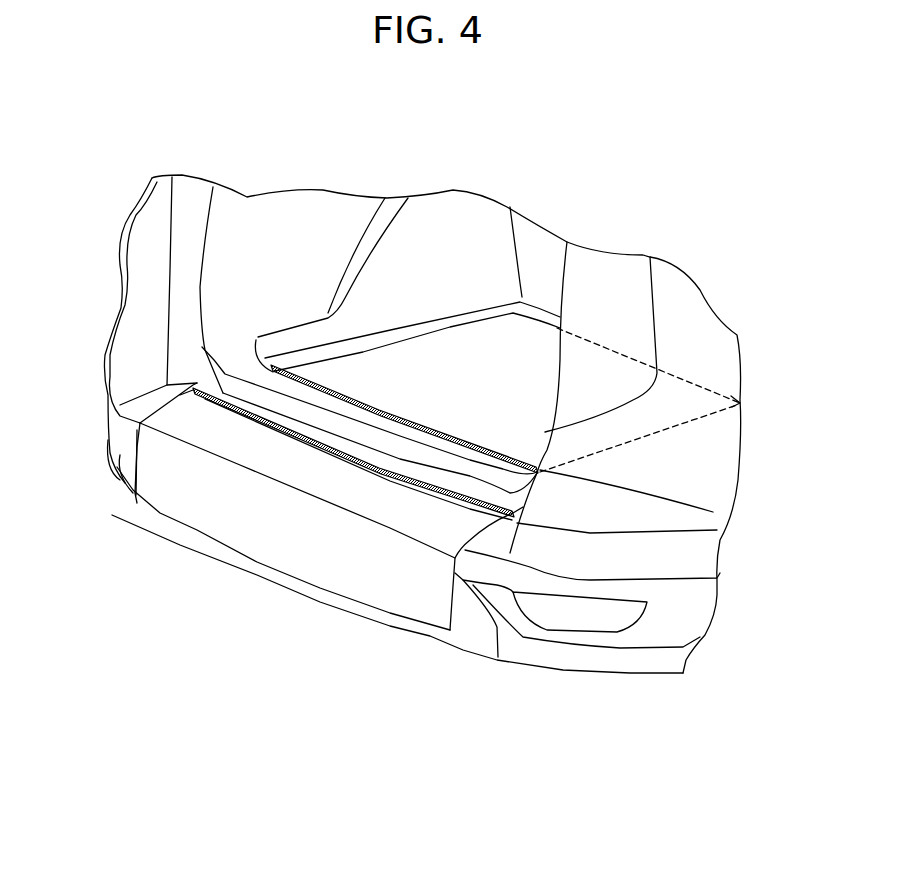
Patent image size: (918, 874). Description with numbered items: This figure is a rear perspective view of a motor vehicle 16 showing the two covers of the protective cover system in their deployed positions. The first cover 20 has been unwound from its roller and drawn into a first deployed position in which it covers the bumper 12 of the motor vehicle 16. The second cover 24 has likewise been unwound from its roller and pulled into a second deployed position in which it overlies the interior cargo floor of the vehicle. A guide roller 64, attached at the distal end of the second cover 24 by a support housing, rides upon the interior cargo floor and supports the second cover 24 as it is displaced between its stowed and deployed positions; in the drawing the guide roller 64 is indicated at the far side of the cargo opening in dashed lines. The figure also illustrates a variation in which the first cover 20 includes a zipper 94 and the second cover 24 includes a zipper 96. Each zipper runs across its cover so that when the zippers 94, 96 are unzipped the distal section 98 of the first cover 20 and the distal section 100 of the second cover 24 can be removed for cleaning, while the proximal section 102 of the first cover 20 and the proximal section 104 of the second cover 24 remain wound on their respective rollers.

The bumper 12 is at (467, 630).
The motor vehicle 16 is at (290, 237).
The first cover 20 is at (317, 562).
The second cover 24 is at (490, 367).
The guide roller 64 is at (742, 406).
The zipper 94 is at (280, 433).
The zipper 96 is at (358, 397).
The distal section 98 is at (163, 480).
The distal section 100 is at (527, 393).
The proximal section 102 is at (228, 373).
The proximal section 104 is at (407, 437).